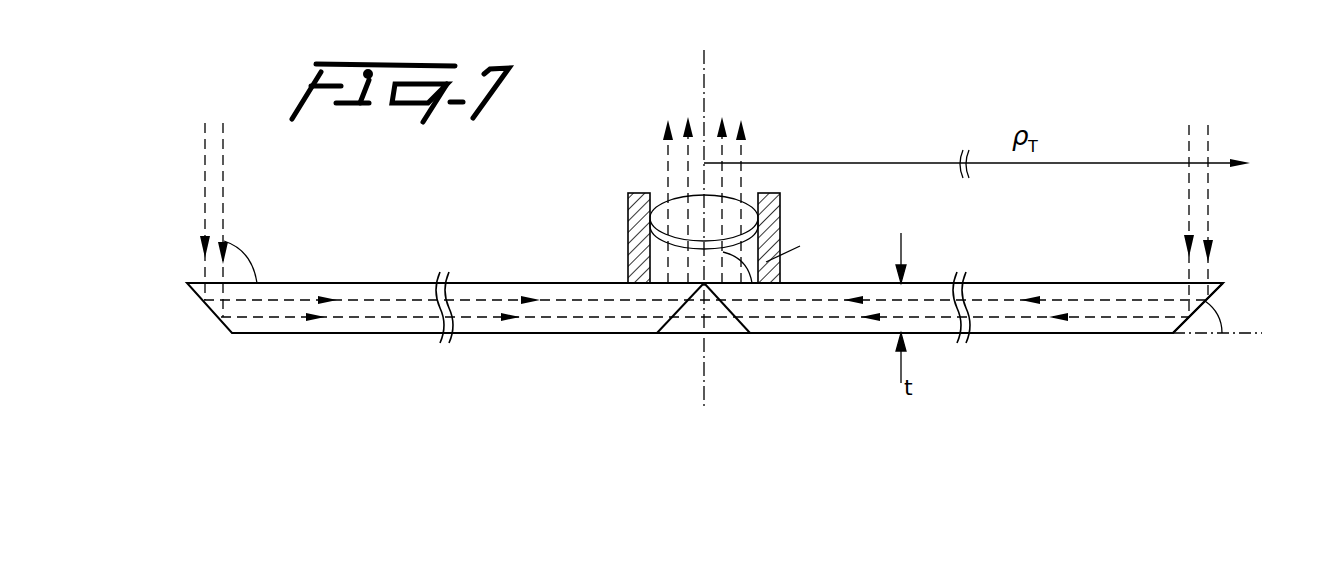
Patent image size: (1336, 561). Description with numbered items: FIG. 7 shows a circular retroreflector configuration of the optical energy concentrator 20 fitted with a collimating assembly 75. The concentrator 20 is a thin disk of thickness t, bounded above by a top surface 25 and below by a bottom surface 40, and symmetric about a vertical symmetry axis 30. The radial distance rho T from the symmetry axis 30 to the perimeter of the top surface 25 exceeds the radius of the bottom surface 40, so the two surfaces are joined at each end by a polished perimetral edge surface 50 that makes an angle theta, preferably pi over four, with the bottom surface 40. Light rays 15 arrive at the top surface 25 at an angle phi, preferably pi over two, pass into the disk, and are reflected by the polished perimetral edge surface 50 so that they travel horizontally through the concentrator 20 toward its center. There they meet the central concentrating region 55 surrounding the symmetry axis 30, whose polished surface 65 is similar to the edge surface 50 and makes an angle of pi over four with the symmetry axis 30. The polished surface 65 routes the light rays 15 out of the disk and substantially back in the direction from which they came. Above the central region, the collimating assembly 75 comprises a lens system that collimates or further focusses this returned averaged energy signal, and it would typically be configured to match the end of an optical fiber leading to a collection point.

The light rays 15 is at (180, 178).
The optical energy concentrator 20 is at (1050, 268).
The top surface 25 is at (350, 283).
The symmetry axis 30 is at (714, 73).
The bottom surface 40 is at (1063, 333).
The polished perimetral edge surface 50 is at (1225, 290).
The central concentrating region 55 is at (722, 321).
The polished surface 65 is at (676, 318).
The collimating assembly 75 is at (628, 206).